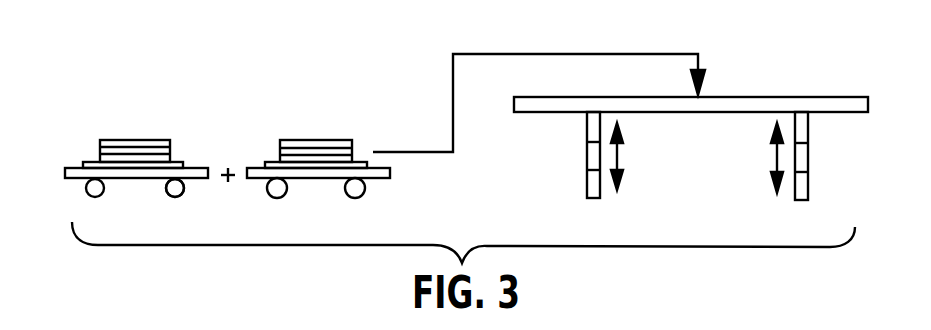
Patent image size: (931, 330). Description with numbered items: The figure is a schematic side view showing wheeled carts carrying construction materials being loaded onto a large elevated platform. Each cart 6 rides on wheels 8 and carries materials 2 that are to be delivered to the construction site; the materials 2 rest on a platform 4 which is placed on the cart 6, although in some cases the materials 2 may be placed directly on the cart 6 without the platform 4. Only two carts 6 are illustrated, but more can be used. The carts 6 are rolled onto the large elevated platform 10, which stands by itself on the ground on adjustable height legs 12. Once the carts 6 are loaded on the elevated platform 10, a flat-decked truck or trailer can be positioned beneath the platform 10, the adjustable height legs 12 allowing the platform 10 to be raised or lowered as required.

The materials 2 is at (153, 140).
The platform 4 is at (90, 162).
The cart 6 is at (65, 170).
The wheels 8 is at (168, 189).
The large elevated platform 10 is at (748, 97).
The adjustable height legs 12 is at (587, 145).